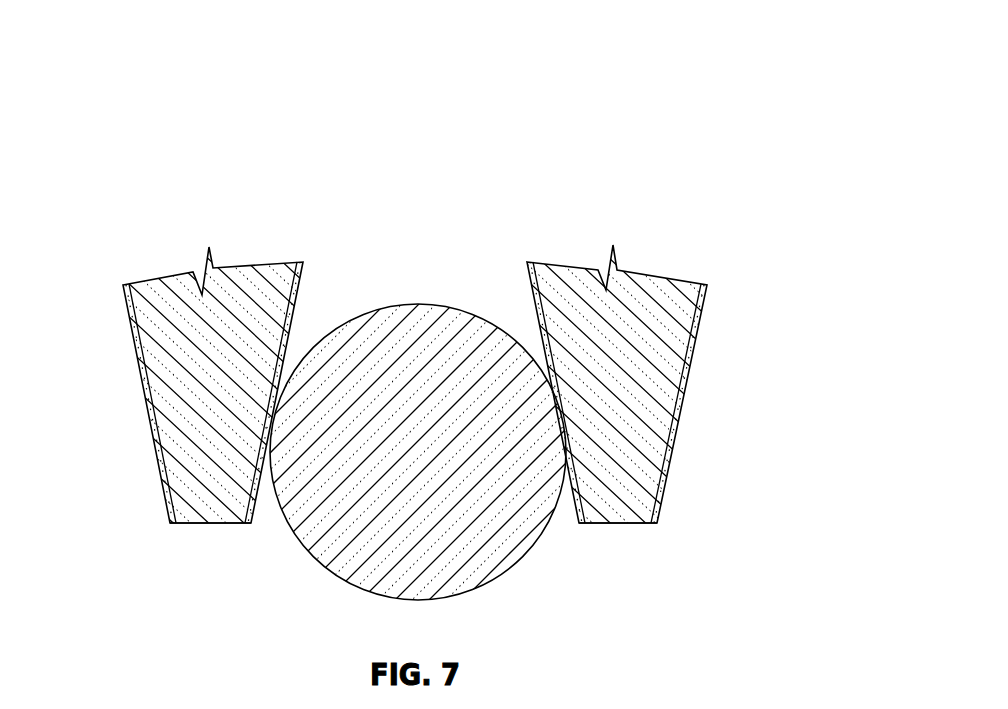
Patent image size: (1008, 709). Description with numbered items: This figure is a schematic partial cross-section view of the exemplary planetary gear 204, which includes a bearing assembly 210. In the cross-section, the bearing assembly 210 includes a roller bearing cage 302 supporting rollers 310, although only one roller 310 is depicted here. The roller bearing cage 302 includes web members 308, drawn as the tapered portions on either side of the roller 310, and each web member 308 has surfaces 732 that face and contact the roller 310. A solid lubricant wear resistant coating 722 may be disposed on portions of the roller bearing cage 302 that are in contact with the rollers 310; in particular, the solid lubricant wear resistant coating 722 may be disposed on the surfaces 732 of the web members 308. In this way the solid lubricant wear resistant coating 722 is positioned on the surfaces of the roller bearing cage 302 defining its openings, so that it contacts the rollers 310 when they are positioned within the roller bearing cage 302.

The planetary gear 204 is at (411, 380).
The bearing assembly 210 is at (762, 240).
The roller bearing cage 302 is at (124, 410).
The web members 308 is at (203, 524).
The roller 310 is at (435, 304).
The solid lubricant wear resistant coating 722 is at (127, 308).
The surfaces 732 is at (135, 316).